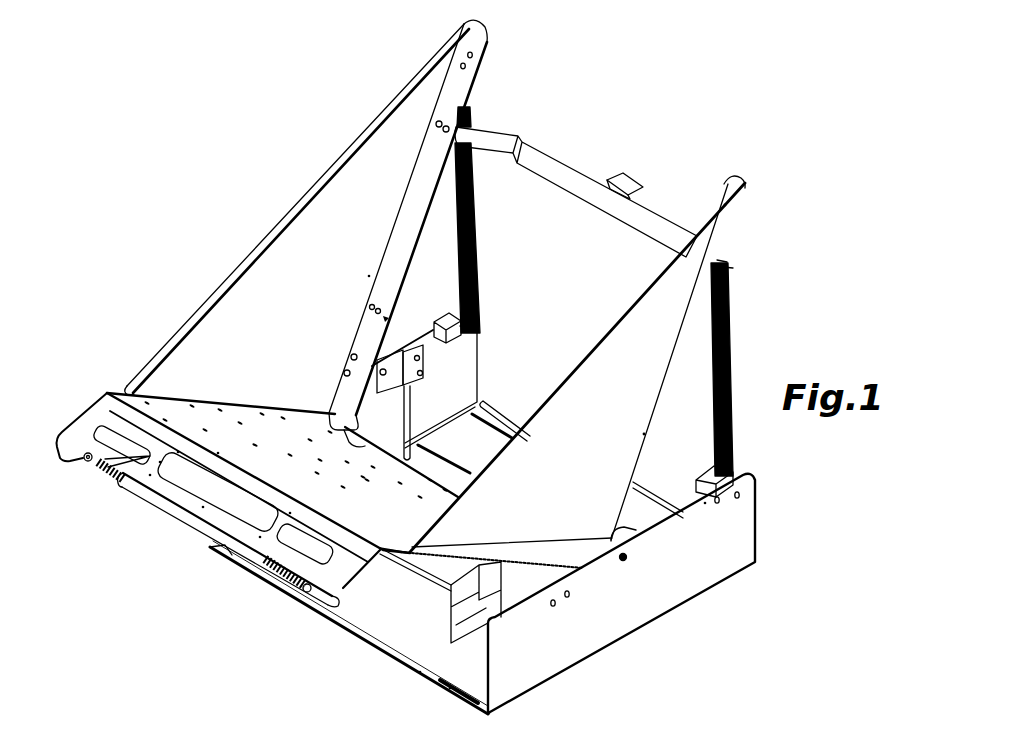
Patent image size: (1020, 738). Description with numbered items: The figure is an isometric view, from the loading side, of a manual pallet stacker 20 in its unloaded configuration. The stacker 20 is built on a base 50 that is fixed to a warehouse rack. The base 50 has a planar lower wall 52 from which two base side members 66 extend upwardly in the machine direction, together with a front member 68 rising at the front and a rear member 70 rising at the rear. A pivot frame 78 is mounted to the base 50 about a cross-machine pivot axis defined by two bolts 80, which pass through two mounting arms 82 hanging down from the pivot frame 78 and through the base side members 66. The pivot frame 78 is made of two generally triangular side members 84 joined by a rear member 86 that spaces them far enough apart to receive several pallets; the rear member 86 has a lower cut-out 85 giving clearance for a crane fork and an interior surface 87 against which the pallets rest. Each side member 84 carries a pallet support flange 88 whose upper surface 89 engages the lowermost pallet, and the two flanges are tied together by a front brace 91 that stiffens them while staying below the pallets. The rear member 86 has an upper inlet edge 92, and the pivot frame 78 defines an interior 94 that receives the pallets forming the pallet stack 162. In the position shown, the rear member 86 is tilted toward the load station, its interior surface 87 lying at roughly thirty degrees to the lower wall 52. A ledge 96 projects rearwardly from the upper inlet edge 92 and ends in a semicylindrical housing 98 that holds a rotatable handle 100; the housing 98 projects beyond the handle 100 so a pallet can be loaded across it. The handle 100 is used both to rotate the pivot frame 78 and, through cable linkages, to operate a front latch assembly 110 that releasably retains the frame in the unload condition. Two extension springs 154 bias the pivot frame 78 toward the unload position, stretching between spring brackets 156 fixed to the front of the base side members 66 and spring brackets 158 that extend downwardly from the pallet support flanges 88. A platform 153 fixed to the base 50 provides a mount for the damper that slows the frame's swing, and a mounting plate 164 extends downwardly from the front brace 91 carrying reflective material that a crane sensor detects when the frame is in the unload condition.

The manual pallet stacker 20 is at (236, 222).
The base 50 is at (641, 631).
The planar lower wall 52 is at (452, 672).
The base side members 66 is at (478, 354).
The front member 68 is at (517, 412).
The rear member 70 is at (397, 661).
The pivot frame 78 is at (638, 296).
The bolts 80 is at (628, 558).
The mounting arms 82 is at (632, 528).
The side members 84 is at (202, 316).
The lower cut-out 85 is at (372, 449).
The rear member 86 is at (365, 520).
The interior surface 87 is at (265, 447).
The pallet support flanges 88 is at (428, 207).
The upper surface 89 is at (427, 178).
The front brace 91 is at (567, 165).
The upper inlet edge 92 is at (158, 413).
The interior 94 is at (362, 311).
The ledge 96 is at (172, 497).
The semicylindrical housing 98 is at (68, 459).
The rotatable handle 100 is at (108, 478).
The front latch assembly 110 is at (412, 380).
The platform 153 is at (370, 593).
The extension springs 154 is at (480, 272).
The spring brackets 156 is at (449, 320).
The spring brackets 158 is at (729, 263).
The pallet stack 162 is at (775, 732).
The mounting plate 164 is at (630, 178).